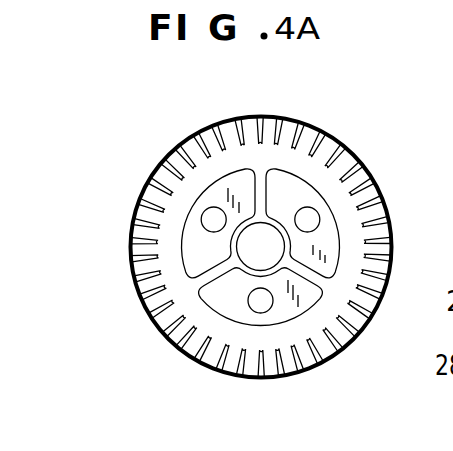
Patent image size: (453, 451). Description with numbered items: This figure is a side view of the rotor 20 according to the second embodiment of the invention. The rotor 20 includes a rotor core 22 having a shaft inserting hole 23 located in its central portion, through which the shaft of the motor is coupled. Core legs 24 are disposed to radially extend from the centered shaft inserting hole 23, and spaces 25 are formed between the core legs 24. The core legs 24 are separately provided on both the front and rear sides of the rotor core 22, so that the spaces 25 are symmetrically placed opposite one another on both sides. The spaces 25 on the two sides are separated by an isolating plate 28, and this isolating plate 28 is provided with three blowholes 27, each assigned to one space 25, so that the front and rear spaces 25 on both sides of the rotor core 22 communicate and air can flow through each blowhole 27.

The rotor 20 is at (113, 138).
The rotor core 22 is at (176, 151).
The shaft inserting hole 23 is at (241, 272).
The core legs 24 is at (186, 271).
The spaces 25 is at (205, 241).
The blowholes 27 is at (249, 301).
The isolating plate 28 is at (290, 193).